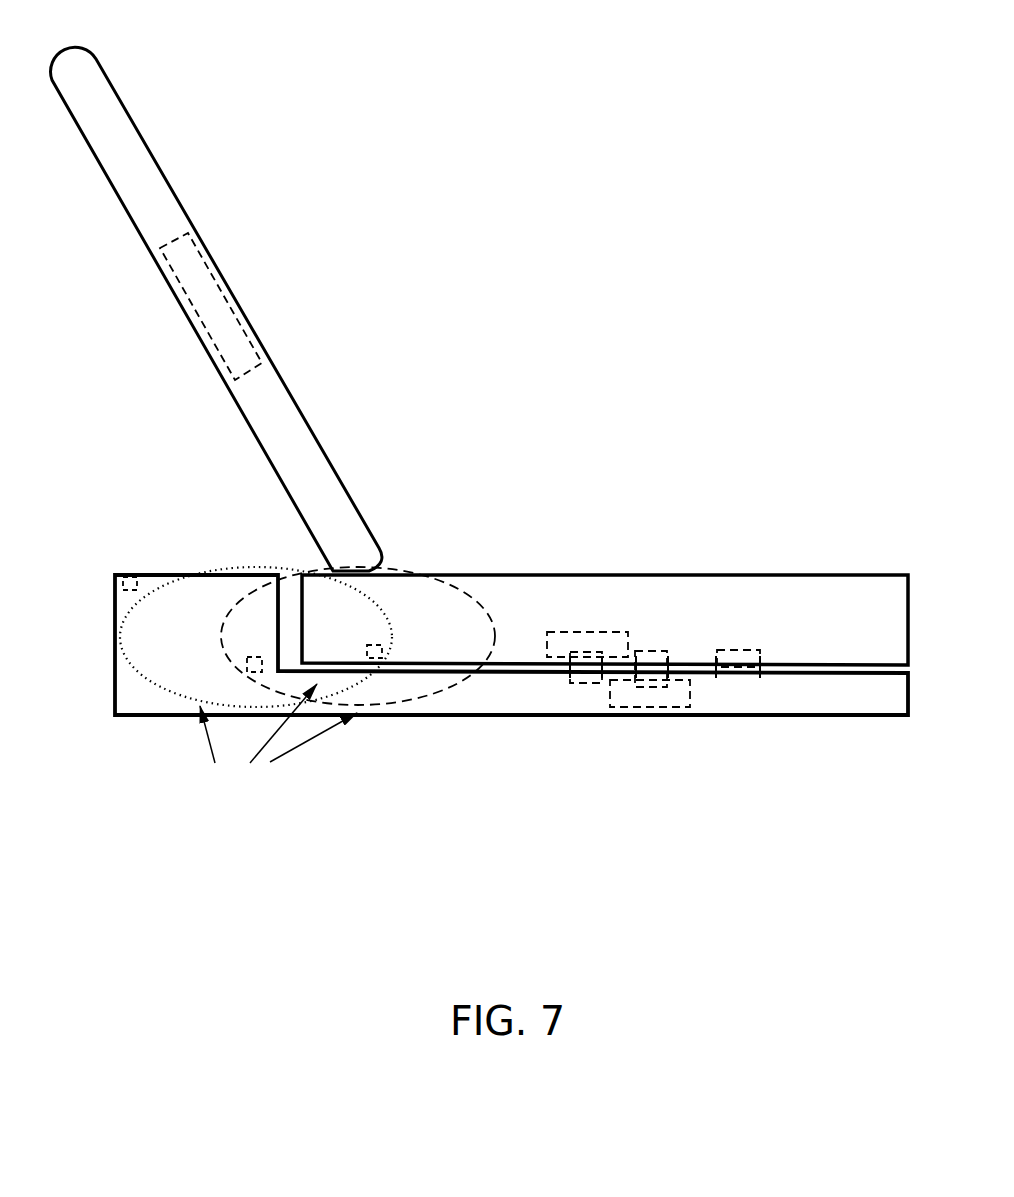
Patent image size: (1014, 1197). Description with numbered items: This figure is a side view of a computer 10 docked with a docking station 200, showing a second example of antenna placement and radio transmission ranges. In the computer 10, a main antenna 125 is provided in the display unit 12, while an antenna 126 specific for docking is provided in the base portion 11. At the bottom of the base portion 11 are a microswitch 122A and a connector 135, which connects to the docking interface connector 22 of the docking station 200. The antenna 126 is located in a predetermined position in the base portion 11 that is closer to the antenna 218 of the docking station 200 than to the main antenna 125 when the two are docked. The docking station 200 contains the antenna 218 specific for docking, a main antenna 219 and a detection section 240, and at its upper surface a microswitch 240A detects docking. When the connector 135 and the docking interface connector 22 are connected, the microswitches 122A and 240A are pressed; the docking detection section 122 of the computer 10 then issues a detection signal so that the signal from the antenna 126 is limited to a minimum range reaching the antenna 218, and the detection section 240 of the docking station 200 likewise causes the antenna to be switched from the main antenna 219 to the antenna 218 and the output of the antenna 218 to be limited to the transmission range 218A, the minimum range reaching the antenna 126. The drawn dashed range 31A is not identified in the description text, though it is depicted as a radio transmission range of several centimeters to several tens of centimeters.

The computer 10 is at (449, 426).
The display unit 12 is at (314, 428).
The main antenna 125 is at (200, 333).
The base portion 11 is at (808, 575).
The docking station 200 is at (773, 718).
The docking interface connector 22 is at (764, 670).
The main antenna 219 is at (122, 584).
The antenna specific for docking 218 is at (246, 660).
The transmission range 218A is at (130, 713).
The antenna specific for docking 126 is at (367, 643).
The radio transmission range 31A is at (442, 697).
The docking detection section 122 is at (592, 631).
The microswitch 122A is at (563, 668).
The microswitch 240A is at (678, 660).
The detection section 240 is at (670, 708).
The connector 135 is at (750, 648).